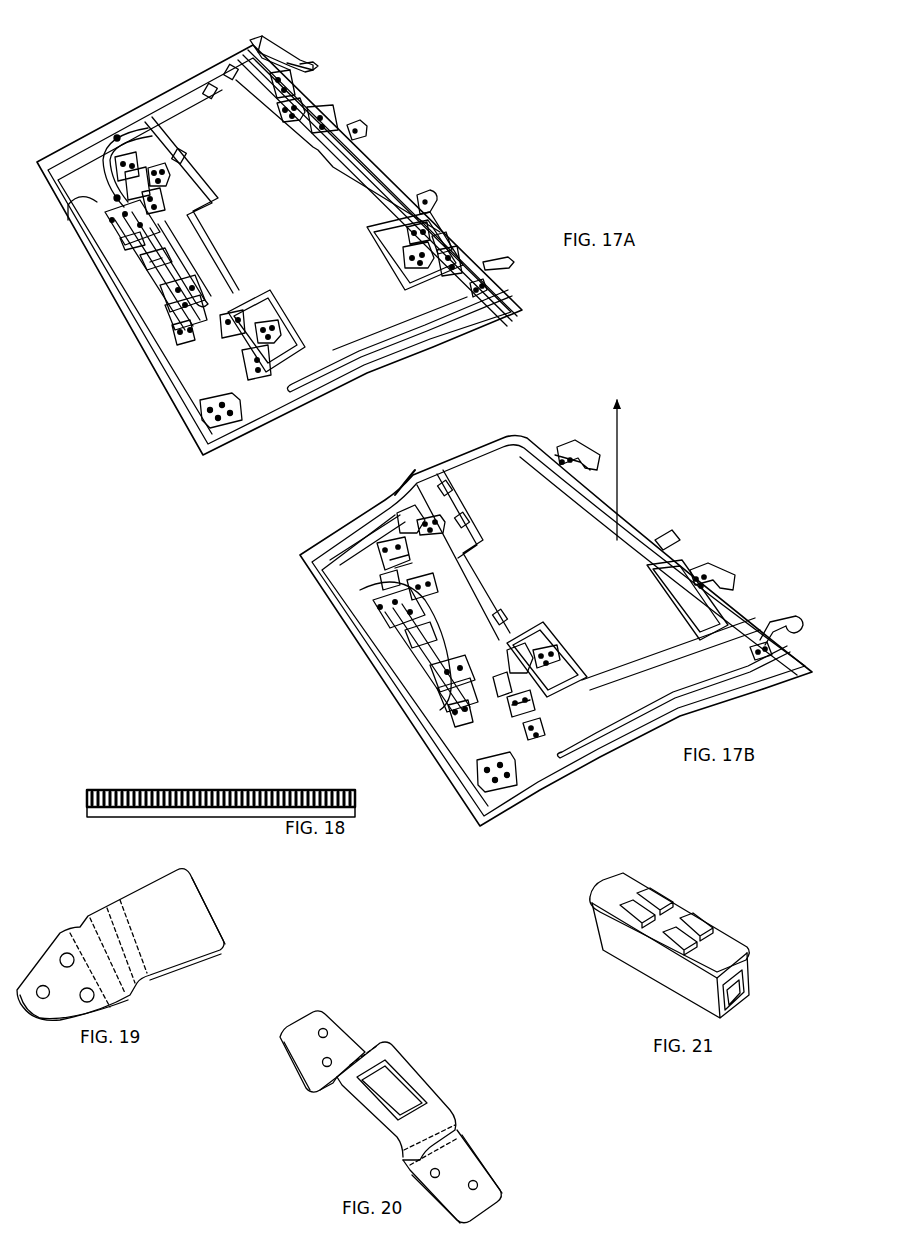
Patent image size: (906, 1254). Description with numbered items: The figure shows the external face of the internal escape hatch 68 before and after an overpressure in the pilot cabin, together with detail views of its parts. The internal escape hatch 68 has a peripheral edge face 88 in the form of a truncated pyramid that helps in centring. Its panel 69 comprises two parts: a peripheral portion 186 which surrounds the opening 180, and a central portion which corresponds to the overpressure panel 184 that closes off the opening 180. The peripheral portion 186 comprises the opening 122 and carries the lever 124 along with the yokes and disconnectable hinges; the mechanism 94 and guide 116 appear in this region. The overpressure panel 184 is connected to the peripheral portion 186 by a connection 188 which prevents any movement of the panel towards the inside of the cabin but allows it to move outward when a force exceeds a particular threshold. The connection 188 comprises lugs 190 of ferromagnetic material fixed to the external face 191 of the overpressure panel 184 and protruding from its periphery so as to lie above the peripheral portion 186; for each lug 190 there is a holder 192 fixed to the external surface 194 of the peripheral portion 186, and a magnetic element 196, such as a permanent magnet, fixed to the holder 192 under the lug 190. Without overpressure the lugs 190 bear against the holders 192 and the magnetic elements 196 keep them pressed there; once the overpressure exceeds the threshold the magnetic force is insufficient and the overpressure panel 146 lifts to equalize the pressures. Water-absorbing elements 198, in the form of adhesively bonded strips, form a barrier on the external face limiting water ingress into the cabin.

In FIG. 17A, the internal escape hatch 68 is at (180, 68).
In FIG. 17B, the panel 69 is at (460, 735).
In FIG. 17A, the peripheral edge face 88 is at (400, 346).
In FIG. 17B, the peripheral edge face 88 is at (600, 748).
In FIG. 17A, the drive mechanism 94 is at (166, 330).
In FIG. 17B, the drive mechanism 94 is at (405, 685).
In FIG. 17A, the guide rail 116 is at (120, 228).
In FIG. 17B, the guide rail 116 is at (375, 614).
In FIG. 17A, the opening 122 is at (185, 262).
In FIG. 17B, the opening 122 is at (440, 628).
In FIG. 17A, the lever 124 is at (300, 60).
In FIG. 17A, the overpressure panel 146 is at (317, 70).
In FIG. 17B, the overpressure panel 146 is at (788, 612).
In FIG. 17B, the opening 180 is at (712, 664).
In FIG. 17A, the overpressure panel 184 is at (330, 190).
In FIG. 17B, the overpressure panel 184 is at (623, 560).
In FIG. 17A, the peripheral portion 186 is at (80, 163).
In FIG. 17B, the peripheral portion 186 is at (345, 525).
In FIG. 17A, the connection 188 is at (139, 172).
In FIG. 17A, the lug 190 is at (437, 215).
In FIG. 17B, the lug 190 is at (570, 447).
In FIG. 19, the lug 190 is at (100, 885).
In FIG. 17B, the external face 191 is at (430, 480).
In FIG. 17A, the holder 192 is at (452, 248).
In FIG. 17B, the holder 192 is at (378, 556).
In FIG. 20, the holder 192 is at (425, 1052).
In FIG. 17A, the external surface 194 is at (68, 220).
In FIG. 17B, the magnetic element 196 is at (383, 580).
In FIG. 21, the magnetic element 196 is at (735, 918).
In FIG. 17A, the water-absorbing element 198 is at (230, 72).
In FIG. 17B, the water-absorbing element 198 is at (500, 617).
In FIG. 18, the water-absorbing element 198 is at (178, 788).